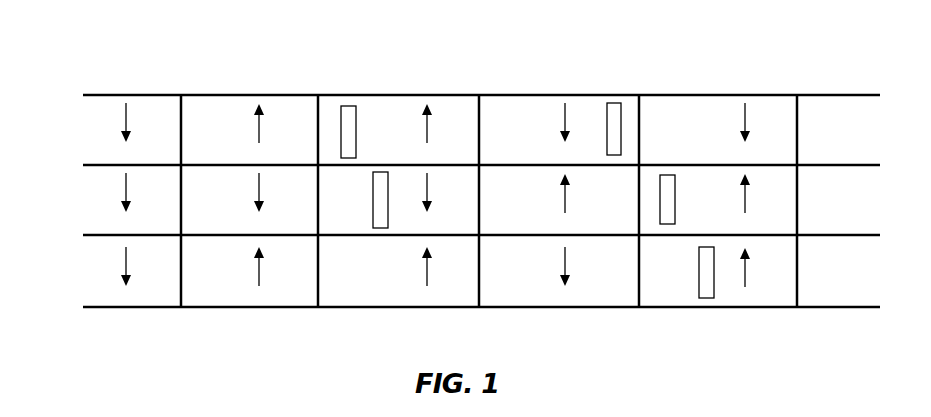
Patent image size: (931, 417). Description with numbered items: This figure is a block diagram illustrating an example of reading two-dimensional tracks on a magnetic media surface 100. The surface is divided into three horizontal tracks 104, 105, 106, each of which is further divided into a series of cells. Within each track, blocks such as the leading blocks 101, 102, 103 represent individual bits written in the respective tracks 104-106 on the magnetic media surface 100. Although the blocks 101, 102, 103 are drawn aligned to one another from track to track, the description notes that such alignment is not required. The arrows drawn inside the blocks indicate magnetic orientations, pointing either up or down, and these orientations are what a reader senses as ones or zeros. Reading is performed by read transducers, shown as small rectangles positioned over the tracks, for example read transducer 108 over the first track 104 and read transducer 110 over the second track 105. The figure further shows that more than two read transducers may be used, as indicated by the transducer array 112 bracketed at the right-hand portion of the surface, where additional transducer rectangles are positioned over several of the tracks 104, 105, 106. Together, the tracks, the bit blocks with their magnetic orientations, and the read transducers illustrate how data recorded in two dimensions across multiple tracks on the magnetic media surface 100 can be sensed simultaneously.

The magnetic media surface 100 is at (445, 213).
The block 101 is at (141, 131).
The block 102 is at (141, 201).
The block 103 is at (141, 273).
The track 104 is at (380, 103).
The track 105 is at (380, 149).
The track 106 is at (380, 271).
The read transducer 108 is at (348, 93).
The read transducer 110 is at (380, 170).
The transducer array 112 is at (753, 60).